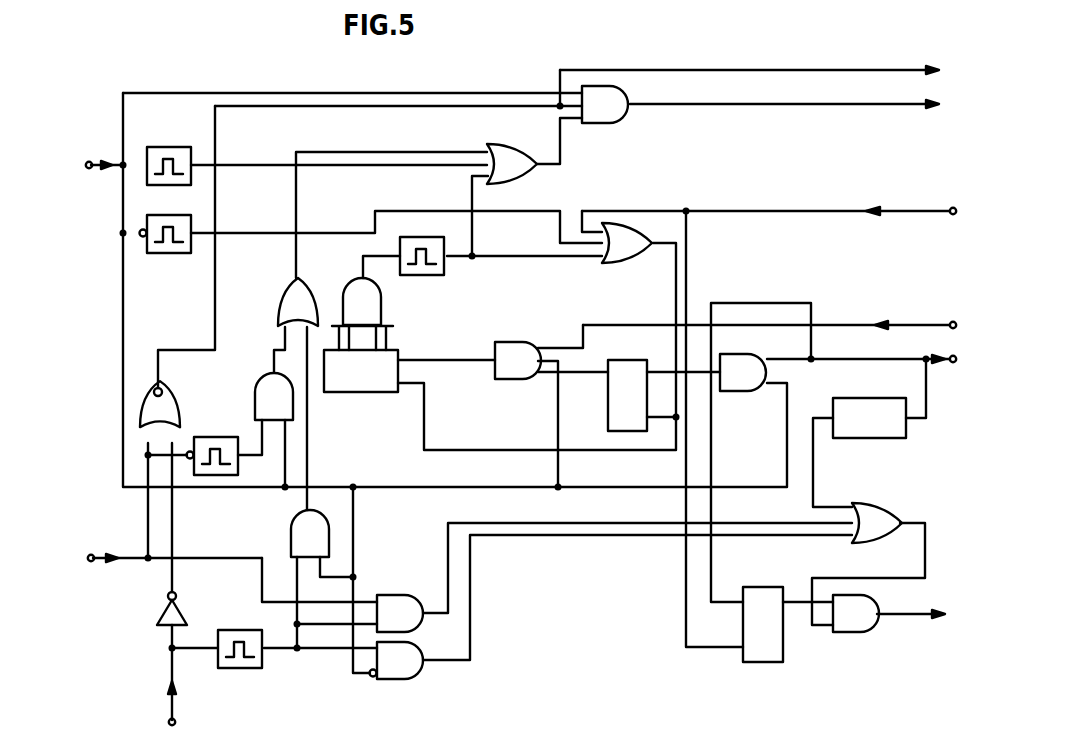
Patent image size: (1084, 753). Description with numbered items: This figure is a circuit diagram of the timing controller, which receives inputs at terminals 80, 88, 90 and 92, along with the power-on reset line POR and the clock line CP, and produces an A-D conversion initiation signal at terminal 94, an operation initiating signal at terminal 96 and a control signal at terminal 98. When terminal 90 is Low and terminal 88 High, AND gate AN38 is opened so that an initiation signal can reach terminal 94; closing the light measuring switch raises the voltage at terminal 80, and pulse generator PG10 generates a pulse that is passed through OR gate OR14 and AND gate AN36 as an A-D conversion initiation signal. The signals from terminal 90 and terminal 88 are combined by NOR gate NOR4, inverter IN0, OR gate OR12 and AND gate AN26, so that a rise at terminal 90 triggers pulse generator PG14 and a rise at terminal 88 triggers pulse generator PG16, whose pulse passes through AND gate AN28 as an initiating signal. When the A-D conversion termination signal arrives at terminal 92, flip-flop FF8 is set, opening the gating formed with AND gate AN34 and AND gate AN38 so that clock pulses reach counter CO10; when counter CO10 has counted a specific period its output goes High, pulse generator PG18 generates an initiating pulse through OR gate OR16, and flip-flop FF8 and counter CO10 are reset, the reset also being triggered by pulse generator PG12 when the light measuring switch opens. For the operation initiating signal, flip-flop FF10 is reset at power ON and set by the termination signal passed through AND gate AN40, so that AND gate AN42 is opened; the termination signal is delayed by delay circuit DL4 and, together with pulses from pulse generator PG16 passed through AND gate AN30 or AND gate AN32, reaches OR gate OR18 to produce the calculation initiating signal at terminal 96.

The terminal 80 is at (101, 180).
The terminal 88 is at (175, 717).
The terminal 90 is at (173, 576).
The terminal 92 is at (879, 369).
The terminal 94 is at (802, 108).
The terminal 96 is at (931, 618).
The terminal 98 is at (767, 74).
The power-on reset input POR is at (785, 228).
The clock pulse input CP is at (788, 330).
The pulse generator PG10 is at (163, 147).
The pulse generator PG12 is at (162, 253).
The pulse generator PG14 is at (215, 437).
The pulse generator PG16 is at (246, 668).
The pulse generator PG18 is at (430, 276).
The NOR gate NOR4 is at (166, 402).
The inverter IN0 is at (160, 615).
The AND gate AN26 is at (274, 396).
The AND gate AN28 is at (310, 533).
The AND gate AN30 is at (400, 613).
The AND gate AN32 is at (397, 660).
The AND gate AN34 is at (361, 301).
The AND gate AN36 is at (605, 104).
The AND gate AN38 is at (518, 360).
The AND gate AN40 is at (743, 372).
The AND gate AN42 is at (856, 613).
The OR gate OR12 is at (298, 302).
The OR gate OR14 is at (512, 164).
The OR gate OR16 is at (627, 243).
The OR gate OR18 is at (877, 523).
The counter CO10 is at (350, 392).
The flip-flop FF8 is at (608, 396).
The flip-flop FF10 is at (783, 637).
The delay circuit DL4 is at (869, 418).